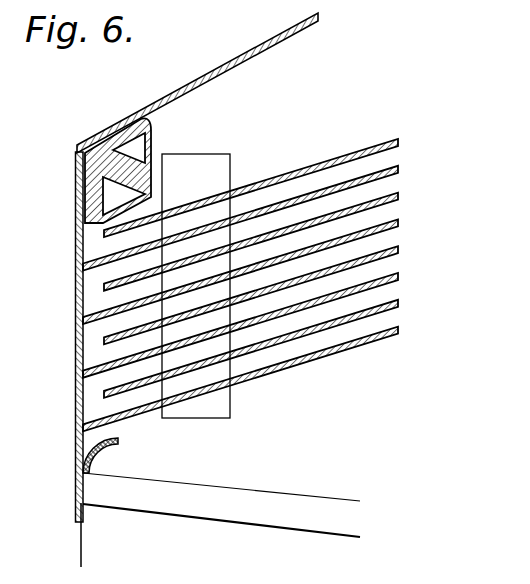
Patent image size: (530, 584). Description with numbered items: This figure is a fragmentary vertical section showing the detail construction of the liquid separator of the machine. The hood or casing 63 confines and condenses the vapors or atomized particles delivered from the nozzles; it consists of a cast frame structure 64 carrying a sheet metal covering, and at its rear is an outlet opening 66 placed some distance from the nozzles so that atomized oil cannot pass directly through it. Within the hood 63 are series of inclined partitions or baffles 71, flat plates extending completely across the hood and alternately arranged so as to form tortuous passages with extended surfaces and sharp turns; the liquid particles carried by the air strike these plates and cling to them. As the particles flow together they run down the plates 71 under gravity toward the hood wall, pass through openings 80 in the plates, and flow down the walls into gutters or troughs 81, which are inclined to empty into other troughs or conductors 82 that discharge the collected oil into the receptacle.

The hood or casing 63 is at (268, 46).
The frame structure 64 is at (147, 121).
The outlet opening 66 is at (80, 543).
The inclined partitions or baffles 71 is at (220, 285).
The openings 80 is at (90, 320).
The gutters or troughs 81 is at (121, 441).
The troughs or conductors 82 is at (312, 498).